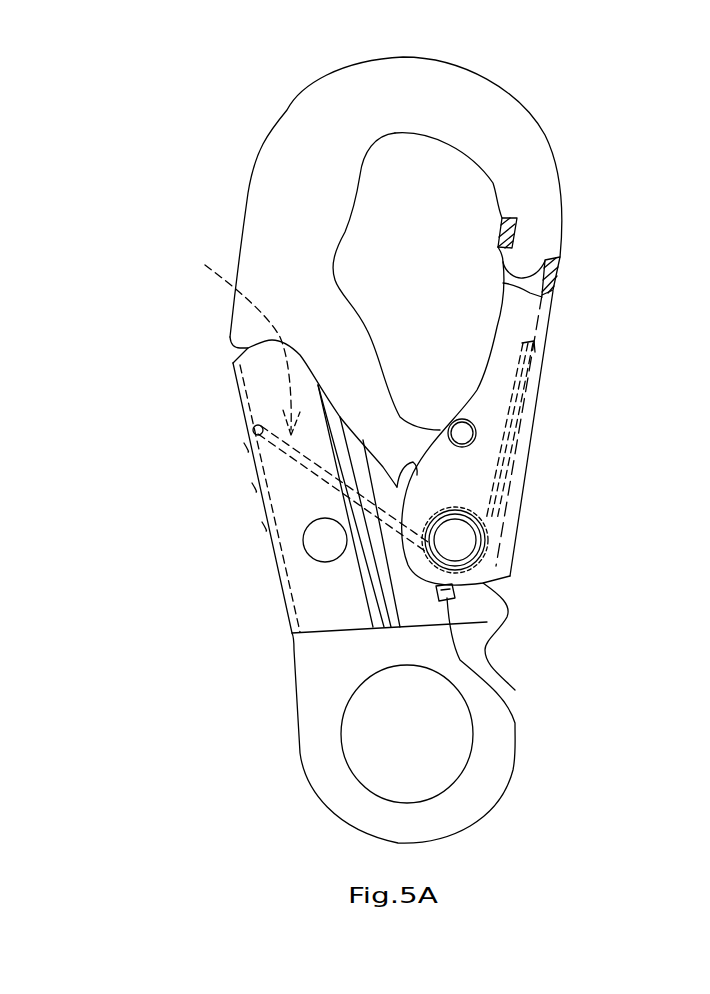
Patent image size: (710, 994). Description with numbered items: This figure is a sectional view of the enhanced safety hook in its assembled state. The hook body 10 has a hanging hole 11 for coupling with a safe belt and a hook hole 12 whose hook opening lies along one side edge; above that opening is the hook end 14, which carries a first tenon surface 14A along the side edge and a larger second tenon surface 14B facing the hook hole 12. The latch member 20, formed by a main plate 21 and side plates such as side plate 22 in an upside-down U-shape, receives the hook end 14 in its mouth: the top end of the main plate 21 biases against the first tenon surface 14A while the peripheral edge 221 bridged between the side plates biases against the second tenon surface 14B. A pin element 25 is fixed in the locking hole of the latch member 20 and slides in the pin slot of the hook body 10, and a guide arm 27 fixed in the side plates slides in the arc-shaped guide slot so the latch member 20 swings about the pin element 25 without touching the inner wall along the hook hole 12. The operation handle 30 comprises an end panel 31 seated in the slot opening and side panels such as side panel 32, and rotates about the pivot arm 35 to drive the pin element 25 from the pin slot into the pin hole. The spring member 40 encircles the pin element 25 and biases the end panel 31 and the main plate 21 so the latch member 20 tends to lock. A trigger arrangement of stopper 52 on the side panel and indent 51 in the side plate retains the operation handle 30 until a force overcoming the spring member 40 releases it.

The hook body 10 is at (277, 98).
The hanging hole 11 is at (436, 755).
The hook hole 12 is at (412, 160).
The hook end 14 is at (528, 262).
The first tenon surface 14A is at (560, 258).
The second tenon surface 14B is at (497, 240).
The peripheral edge 221 is at (497, 185).
The latch member 20 is at (552, 398).
The main plate 21 is at (557, 291).
The side plate 22 is at (504, 363).
The pin element 25 is at (460, 541).
The guide arm 27 is at (467, 437).
The operation handle 30 is at (243, 497).
The end panel 31 is at (283, 600).
The side panel 32 is at (260, 377).
The pivot arm 35 is at (320, 538).
The spring member 40 is at (303, 390).
The indent 51 is at (452, 596).
The stopper 52 is at (515, 690).